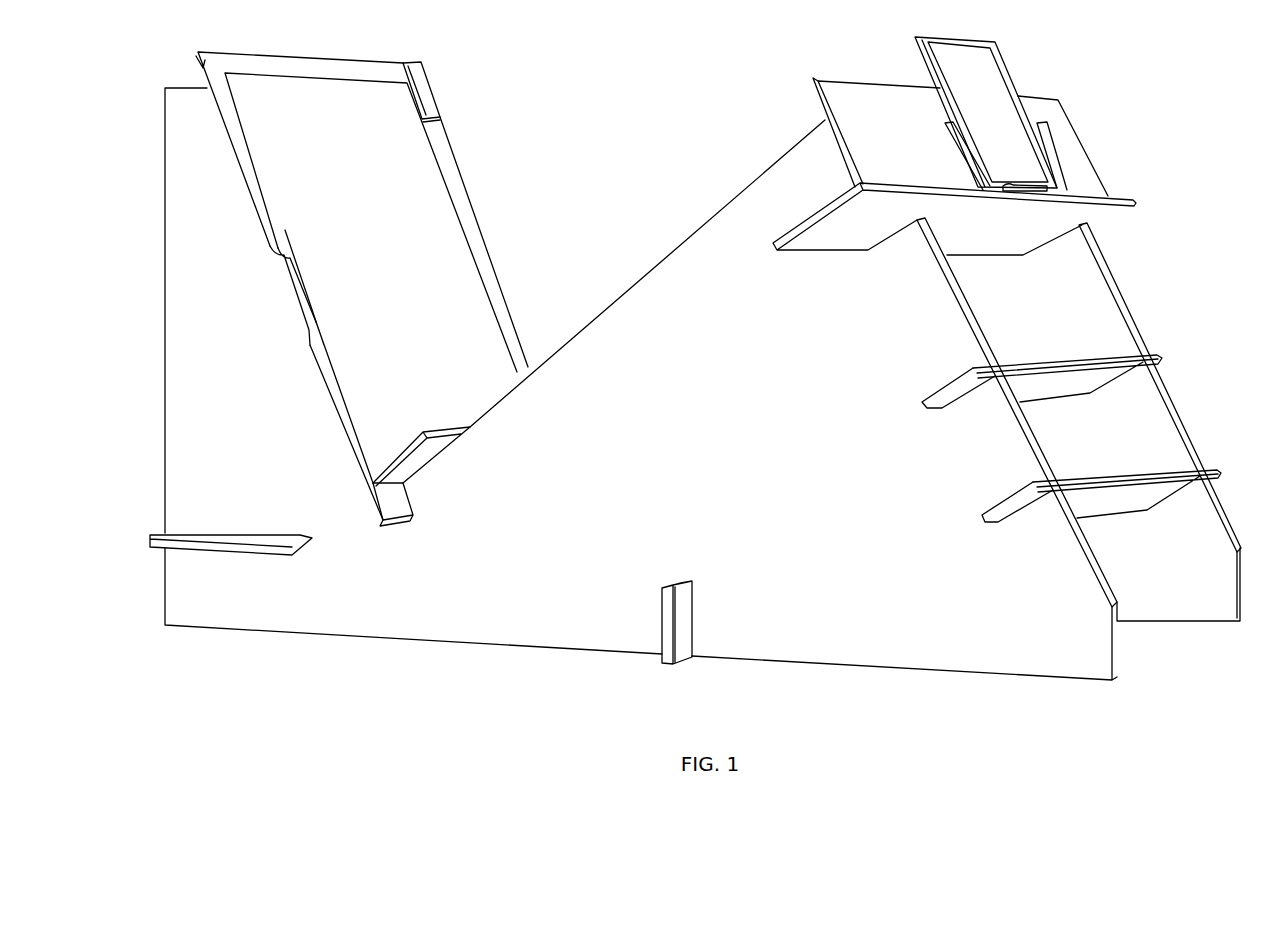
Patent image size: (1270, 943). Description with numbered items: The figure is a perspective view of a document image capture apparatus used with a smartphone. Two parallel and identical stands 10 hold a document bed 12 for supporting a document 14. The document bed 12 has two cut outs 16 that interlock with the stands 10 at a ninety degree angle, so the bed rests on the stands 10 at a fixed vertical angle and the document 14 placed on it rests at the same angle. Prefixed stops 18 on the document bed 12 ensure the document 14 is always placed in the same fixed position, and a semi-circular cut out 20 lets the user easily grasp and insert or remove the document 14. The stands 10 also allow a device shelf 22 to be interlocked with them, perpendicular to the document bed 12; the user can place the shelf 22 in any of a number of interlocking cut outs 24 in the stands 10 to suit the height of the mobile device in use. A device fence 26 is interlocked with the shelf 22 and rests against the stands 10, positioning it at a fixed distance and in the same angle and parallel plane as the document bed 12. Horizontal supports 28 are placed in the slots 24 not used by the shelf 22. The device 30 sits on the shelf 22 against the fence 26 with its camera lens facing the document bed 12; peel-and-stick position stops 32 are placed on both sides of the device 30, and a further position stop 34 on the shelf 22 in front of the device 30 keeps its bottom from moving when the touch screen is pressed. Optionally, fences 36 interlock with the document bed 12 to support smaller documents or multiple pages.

The stand 10 is at (782, 653).
The document bed 12 is at (250, 63).
The document 14 is at (312, 253).
The cut out 16 is at (395, 505).
The prefixed stop 18 is at (423, 88).
The semi-circular cut out 20 is at (286, 301).
The device shelf 22 is at (1103, 213).
The interlocking cut out 24 is at (903, 229).
The device fence 26 is at (890, 97).
The horizontal support 28 is at (1057, 385).
The device 30 is at (990, 67).
The device position stop 32 is at (1050, 143).
The position stop 34 is at (1057, 193).
The fence 36 is at (422, 460).